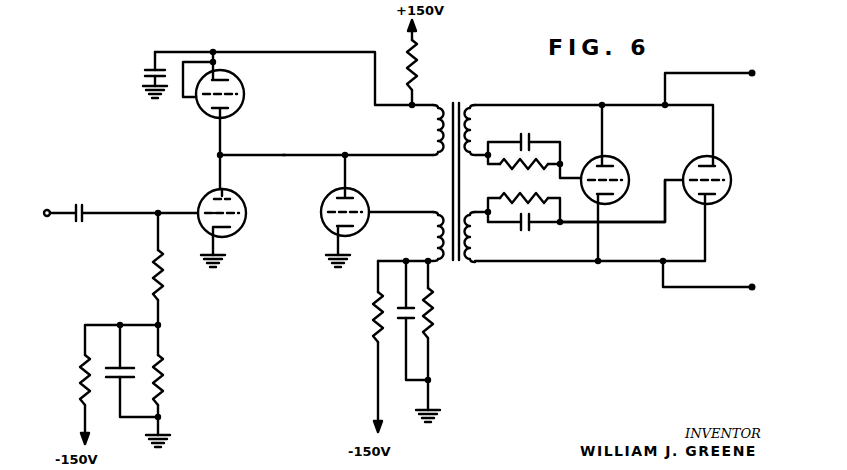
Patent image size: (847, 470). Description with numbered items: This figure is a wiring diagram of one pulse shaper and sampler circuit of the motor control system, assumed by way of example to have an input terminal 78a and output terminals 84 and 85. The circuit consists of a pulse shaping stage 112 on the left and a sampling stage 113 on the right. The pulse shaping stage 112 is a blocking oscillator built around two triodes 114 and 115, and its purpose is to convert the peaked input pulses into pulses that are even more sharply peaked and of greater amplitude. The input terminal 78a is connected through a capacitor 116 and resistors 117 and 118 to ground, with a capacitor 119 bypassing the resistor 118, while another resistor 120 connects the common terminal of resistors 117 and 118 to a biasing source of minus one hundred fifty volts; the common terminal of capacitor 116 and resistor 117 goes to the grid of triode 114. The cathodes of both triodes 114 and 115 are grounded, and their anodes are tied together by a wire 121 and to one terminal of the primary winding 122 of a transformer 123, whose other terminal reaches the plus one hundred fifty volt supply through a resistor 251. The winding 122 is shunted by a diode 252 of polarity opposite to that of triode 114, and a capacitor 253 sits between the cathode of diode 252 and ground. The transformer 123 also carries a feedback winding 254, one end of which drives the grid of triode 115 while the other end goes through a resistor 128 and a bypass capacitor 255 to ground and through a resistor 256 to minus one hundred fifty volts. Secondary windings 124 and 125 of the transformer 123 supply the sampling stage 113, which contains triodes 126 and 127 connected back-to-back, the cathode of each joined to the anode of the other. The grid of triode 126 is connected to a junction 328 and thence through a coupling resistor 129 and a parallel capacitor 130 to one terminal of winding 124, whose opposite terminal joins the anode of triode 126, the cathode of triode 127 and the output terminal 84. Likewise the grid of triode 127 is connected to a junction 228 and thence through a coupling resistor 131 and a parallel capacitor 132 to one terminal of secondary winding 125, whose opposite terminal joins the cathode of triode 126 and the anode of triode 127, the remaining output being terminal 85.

The input terminal 78a is at (64, 186).
The capacitor 116 is at (86, 205).
The triode 114 is at (204, 191).
The pulse shaping stage 112 is at (288, 258).
The resistor 117 is at (148, 274).
The capacitor 119 is at (118, 366).
The resistor 120 is at (80, 377).
The resistor 118 is at (162, 374).
The triode 115 is at (363, 193).
The wire 121 is at (286, 154).
The diode 252 is at (238, 82).
The capacitor 253 is at (154, 58).
The resistor 251 is at (414, 51).
The primary winding 122 is at (434, 134).
The transformer 123 is at (485, 88).
The secondary winding 124 is at (470, 122).
The parallel capacitor 130 is at (522, 140).
The junction 328 is at (564, 164).
The coupling resistor 129 is at (502, 166).
The coupling resistor 131 is at (502, 197).
The secondary winding 125 is at (473, 240).
The parallel capacitor 132 is at (530, 228).
The junction 228 is at (560, 222).
The triode 126 is at (615, 162).
The triode 127 is at (721, 162).
The output terminal 84 is at (760, 72).
The output terminal 85 is at (752, 292).
The sampling stage 113 is at (586, 286).
The feedback winding 254 is at (430, 243).
The bypass capacitor 255 is at (410, 298).
The resistor 256 is at (370, 328).
The resistor 128 is at (433, 330).